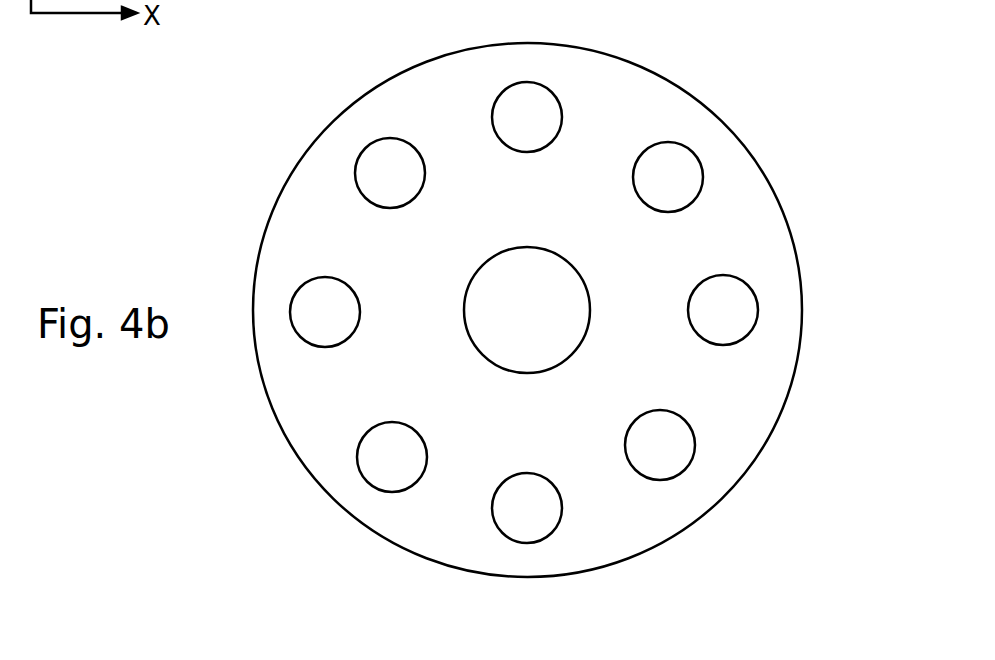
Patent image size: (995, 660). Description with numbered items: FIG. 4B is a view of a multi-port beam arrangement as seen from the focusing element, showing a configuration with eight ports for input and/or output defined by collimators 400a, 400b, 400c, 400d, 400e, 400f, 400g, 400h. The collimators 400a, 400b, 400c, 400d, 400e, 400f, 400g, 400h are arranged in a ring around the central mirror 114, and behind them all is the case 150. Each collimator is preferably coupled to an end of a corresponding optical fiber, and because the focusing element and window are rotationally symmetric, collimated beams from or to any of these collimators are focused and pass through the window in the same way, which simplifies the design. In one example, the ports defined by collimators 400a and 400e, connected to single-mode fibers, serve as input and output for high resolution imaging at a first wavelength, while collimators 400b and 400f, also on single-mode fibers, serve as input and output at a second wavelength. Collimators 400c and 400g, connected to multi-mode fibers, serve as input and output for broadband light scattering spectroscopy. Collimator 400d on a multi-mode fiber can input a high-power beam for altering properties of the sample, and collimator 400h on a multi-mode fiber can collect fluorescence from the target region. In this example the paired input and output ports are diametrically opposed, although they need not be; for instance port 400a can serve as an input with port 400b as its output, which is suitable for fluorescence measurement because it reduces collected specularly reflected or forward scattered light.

The case 150 is at (333, 218).
The mirror 114 is at (572, 305).
The collimator 400a is at (540, 107).
The collimator 400b is at (690, 167).
The collimator 400c is at (740, 317).
The collimator 400d is at (663, 458).
The collimator 400e is at (530, 522).
The collimator 400f is at (380, 470).
The collimator 400g is at (315, 325).
The collimator 400h is at (375, 160).